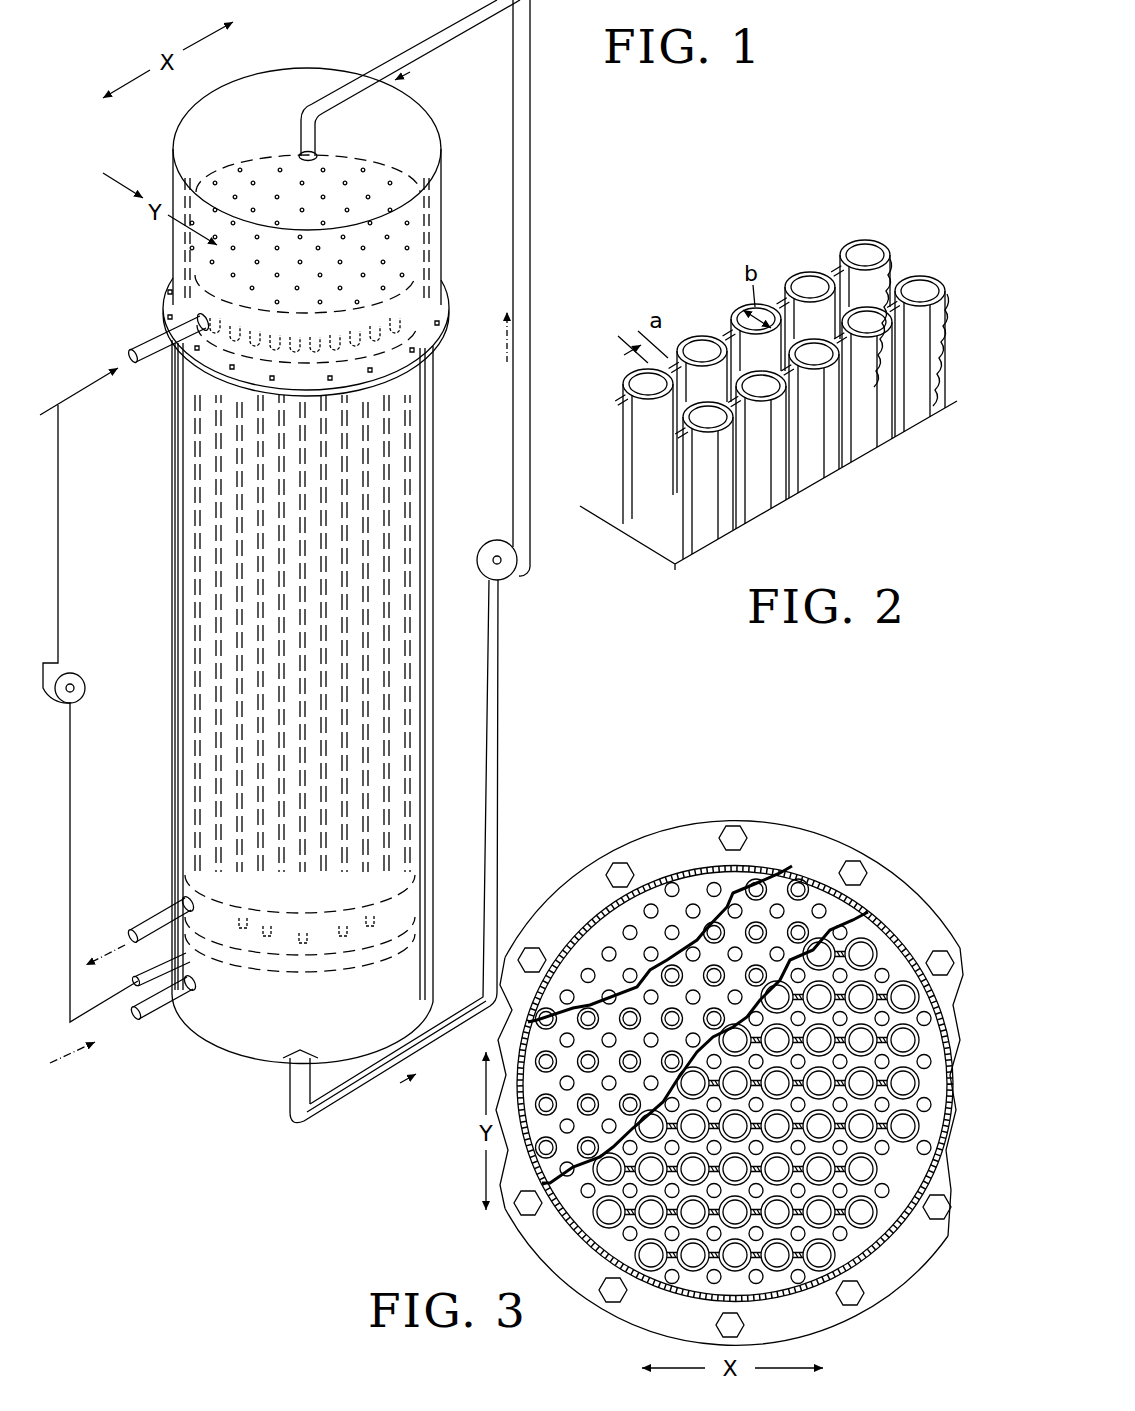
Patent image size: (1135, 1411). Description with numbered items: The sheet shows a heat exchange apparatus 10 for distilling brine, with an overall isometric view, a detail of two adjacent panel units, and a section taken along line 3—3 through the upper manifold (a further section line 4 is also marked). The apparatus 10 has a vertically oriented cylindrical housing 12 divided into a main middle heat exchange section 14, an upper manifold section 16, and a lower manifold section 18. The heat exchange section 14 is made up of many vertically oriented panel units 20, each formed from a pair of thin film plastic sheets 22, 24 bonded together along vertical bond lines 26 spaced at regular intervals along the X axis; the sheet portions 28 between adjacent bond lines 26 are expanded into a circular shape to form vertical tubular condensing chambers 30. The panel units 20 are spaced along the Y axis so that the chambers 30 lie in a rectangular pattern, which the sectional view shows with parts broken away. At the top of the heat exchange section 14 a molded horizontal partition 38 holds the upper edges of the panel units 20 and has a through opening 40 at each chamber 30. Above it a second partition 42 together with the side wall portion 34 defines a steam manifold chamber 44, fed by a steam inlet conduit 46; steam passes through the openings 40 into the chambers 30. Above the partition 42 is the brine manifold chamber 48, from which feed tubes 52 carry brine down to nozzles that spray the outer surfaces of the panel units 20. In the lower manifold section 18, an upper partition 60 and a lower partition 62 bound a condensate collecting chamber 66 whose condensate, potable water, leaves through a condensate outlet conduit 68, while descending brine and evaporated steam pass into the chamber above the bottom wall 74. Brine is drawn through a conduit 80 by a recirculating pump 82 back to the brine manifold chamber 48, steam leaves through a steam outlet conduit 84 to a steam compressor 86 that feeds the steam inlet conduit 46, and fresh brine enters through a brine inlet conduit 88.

In FIG. 1, the heat exchange apparatus 10 is at (553, 160).
In FIG. 1, the housing 12 is at (438, 462).
In FIG. 3, the housing 12 is at (803, 826).
In FIG. 1, the main middle heat exchange section 14 is at (438, 625).
In FIG. 1, the upper manifold section 16 is at (446, 225).
In FIG. 1, the lower manifold section 18 is at (437, 961).
In FIG. 1, the panel unit 20 is at (424, 680).
In FIG. 2, the panel unit 20 is at (654, 564).
In FIG. 3, the panel unit 20 is at (883, 975).
In FIG. 2, the thin film plastic sheet 22 is at (801, 279).
In FIG. 2, the thin film plastic sheet 24 is at (815, 319).
In FIG. 2, the bond line 26 is at (740, 330).
In FIG. 2, the sheet portion 28 is at (822, 458).
In FIG. 2, the condensing chamber 30 is at (920, 290).
In FIG. 3, the condensing chamber 30 is at (862, 1035).
In FIG. 1, the upper cylindrical side wall portion 34 is at (428, 192).
In FIG. 1, the horizontal partition 38 is at (418, 343).
In FIG. 3, the horizontal partition 38 is at (842, 910).
In FIG. 3, the vertical through opening 40 is at (819, 906).
In FIG. 1, the second horizontal partition 42 is at (420, 280).
In FIG. 3, the second horizontal partition 42 is at (607, 940).
In FIG. 1, the steam manifold chamber 44 is at (440, 312).
In FIG. 1, the steam inlet conduit 46 is at (140, 365).
In FIG. 1, the brine manifold chamber 48 is at (423, 143).
In FIG. 3, the feed tube 52 is at (713, 883).
In FIG. 1, the upper partition 60 is at (418, 866).
In FIG. 1, the lower partition 62 is at (402, 928).
In FIG. 1, the condensate collecting chamber 66 is at (418, 898).
In FIG. 1, the condensate outlet conduit 68 is at (150, 908).
In FIG. 1, the bottom wall 74 is at (275, 1060).
In FIG. 1, the conduit 80 is at (288, 1106).
In FIG. 1, the recirculating pump 82 is at (512, 309).
In FIG. 1, the steam outlet conduit 84 is at (148, 970).
In FIG. 1, the steam compressor 86 is at (85, 677).
In FIG. 1, the brine inlet conduit 88 is at (156, 1022).
In FIG. 1, the section line 3- 3 is at (284, 11).
In FIG. 1, the section line 4- 4 is at (295, 1165).